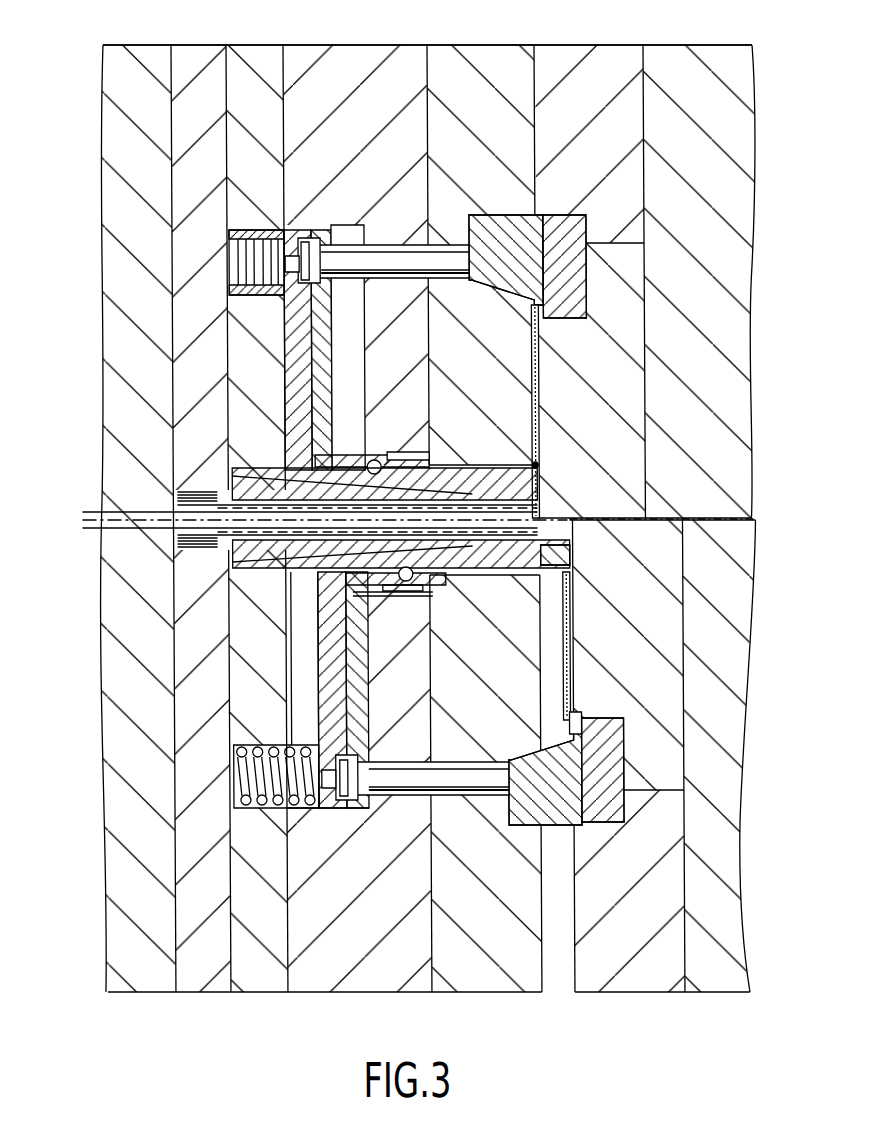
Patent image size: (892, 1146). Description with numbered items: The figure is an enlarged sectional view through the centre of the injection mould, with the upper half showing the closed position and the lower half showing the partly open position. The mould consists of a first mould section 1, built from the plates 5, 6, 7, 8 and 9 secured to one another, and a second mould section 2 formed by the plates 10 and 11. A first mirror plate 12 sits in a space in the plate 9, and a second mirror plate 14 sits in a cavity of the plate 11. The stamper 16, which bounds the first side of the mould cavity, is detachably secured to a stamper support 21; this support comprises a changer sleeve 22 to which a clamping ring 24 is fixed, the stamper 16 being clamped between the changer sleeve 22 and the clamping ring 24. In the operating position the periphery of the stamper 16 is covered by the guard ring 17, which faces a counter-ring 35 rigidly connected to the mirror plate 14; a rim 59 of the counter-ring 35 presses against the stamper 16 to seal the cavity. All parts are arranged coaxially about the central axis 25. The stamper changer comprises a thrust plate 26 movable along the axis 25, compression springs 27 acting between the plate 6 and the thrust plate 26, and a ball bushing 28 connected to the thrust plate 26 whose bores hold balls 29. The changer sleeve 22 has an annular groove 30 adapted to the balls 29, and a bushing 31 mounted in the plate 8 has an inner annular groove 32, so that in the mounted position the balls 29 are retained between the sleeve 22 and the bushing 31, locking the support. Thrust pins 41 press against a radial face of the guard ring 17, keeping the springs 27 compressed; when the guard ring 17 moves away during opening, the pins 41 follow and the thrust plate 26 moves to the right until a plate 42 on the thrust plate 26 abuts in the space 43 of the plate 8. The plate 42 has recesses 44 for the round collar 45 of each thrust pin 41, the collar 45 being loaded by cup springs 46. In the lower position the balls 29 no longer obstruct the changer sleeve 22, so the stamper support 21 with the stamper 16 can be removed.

The first mould section 1 is at (327, 46).
The second mould section 2 is at (585, 46).
The plate 5 is at (147, 975).
The plate 6 is at (214, 975).
The plate 7 is at (265, 975).
The plate 8 is at (362, 975).
The plate 9 is at (479, 975).
The plate 10 is at (718, 975).
The plate 11 is at (620, 975).
The first mirror plate 12 is at (442, 713).
The second mirror plate 14 is at (660, 740).
The stamper 16 is at (537, 395).
The guard ring 17 is at (497, 245).
The stamper support 21 is at (479, 576).
The changer sleeve 22 is at (493, 572).
The clamping ring 24 is at (572, 556).
The central axis 25 is at (662, 518).
The thrust plate 26 is at (333, 790).
The compression springs 27 is at (247, 230).
The ball bushing 28 is at (378, 598).
The balls 29 is at (371, 460).
The annular groove 30 is at (440, 578).
The bushing 31 is at (400, 593).
The annular groove 32 is at (400, 452).
The counter-ring 35 is at (566, 250).
The thrust pins 41 is at (375, 262).
The plate 42 is at (355, 725).
The space 43 is at (348, 322).
The recesses 44 is at (305, 248).
The round collar 45 is at (316, 250).
The cup springs 46 is at (283, 316).
The rim 59 is at (575, 716).